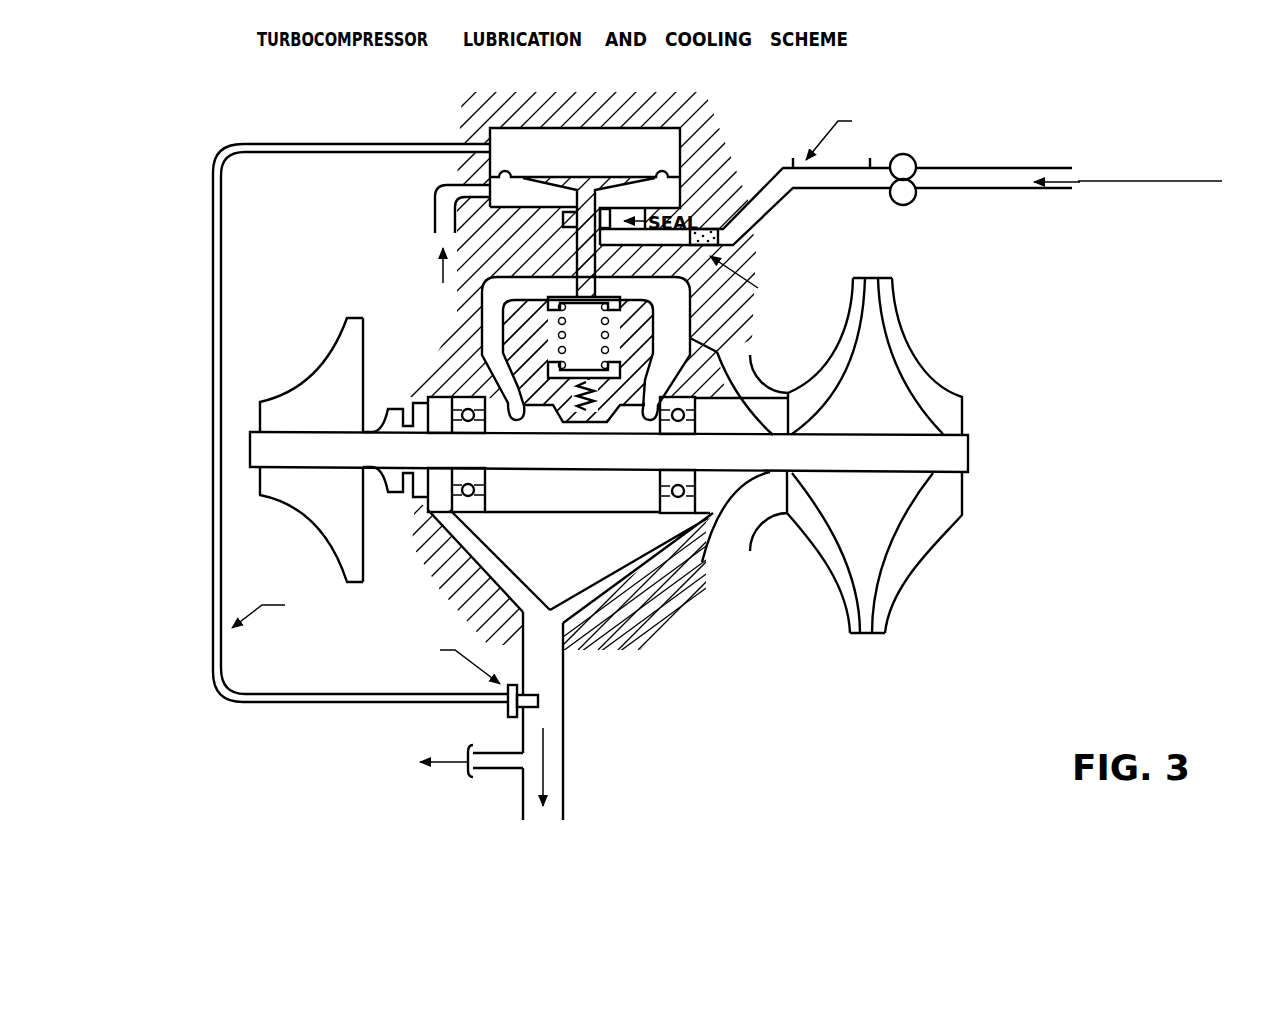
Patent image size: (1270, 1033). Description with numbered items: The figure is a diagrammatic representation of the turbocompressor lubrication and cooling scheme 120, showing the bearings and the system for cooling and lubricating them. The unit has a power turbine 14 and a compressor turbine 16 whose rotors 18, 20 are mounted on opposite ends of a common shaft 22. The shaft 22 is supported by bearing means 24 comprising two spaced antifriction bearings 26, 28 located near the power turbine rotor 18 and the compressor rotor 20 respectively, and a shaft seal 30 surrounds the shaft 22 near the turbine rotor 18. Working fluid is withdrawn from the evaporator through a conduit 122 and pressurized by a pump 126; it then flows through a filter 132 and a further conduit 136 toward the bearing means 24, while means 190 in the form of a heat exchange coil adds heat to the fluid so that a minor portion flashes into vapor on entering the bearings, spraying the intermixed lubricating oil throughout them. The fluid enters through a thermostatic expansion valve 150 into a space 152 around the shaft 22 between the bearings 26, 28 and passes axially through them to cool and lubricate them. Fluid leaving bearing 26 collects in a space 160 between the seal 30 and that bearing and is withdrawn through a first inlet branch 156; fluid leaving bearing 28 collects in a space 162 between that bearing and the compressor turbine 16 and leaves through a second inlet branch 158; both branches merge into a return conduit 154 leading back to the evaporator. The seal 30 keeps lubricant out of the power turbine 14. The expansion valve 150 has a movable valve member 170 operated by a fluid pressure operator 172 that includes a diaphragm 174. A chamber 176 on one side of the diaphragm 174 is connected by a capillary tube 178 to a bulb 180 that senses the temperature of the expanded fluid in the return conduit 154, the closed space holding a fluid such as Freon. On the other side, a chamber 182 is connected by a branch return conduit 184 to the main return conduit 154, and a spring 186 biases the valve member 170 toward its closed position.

The power turbine 14 is at (268, 264).
The compressor turbine 16 is at (959, 255).
The power turbine rotor 18 is at (311, 450).
The compressor rotor 20 is at (880, 455).
The shaft 22 is at (641, 452).
The bearing means 24 is at (569, 561).
The bearing 26 is at (438, 388).
The bearing 28 is at (725, 386).
The shaft seal 30 is at (379, 356).
The turbocompressor lubrication and cooling scheme 120 is at (1110, 47).
The conduit 122 is at (1114, 189).
The pump 126 is at (974, 189).
The filter 132 is at (757, 277).
The conduit 136 is at (836, 215).
The expansion valve 150 is at (624, 82).
The space 152 is at (572, 515).
The return conduit 154 is at (665, 716).
The inlet branch 156 is at (635, 369).
The inlet branch 158 is at (635, 404).
The space 160 is at (395, 505).
The space 162 is at (757, 542).
The valve member 170 is at (537, 257).
The fluid pressure operator 172 is at (635, 165).
The diaphragm 174 is at (635, 369).
The chamber 176 is at (635, 359).
The capillary tube 178 is at (360, 397).
The bulb 180 is at (461, 677).
The chamber 182 is at (629, 176).
The branch return conduit 184 is at (340, 500).
The spring 186 is at (635, 369).
The means for adding heat 190 is at (1021, 168).